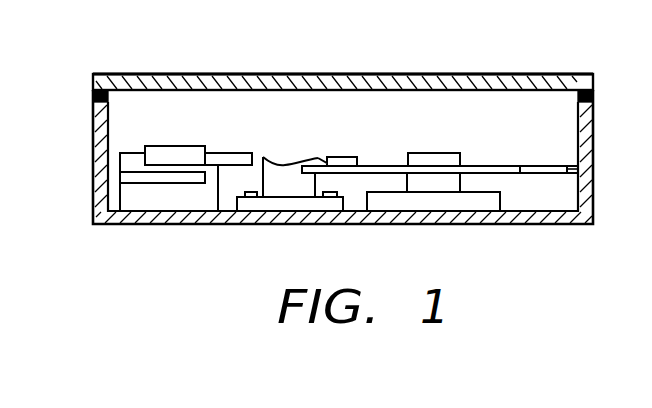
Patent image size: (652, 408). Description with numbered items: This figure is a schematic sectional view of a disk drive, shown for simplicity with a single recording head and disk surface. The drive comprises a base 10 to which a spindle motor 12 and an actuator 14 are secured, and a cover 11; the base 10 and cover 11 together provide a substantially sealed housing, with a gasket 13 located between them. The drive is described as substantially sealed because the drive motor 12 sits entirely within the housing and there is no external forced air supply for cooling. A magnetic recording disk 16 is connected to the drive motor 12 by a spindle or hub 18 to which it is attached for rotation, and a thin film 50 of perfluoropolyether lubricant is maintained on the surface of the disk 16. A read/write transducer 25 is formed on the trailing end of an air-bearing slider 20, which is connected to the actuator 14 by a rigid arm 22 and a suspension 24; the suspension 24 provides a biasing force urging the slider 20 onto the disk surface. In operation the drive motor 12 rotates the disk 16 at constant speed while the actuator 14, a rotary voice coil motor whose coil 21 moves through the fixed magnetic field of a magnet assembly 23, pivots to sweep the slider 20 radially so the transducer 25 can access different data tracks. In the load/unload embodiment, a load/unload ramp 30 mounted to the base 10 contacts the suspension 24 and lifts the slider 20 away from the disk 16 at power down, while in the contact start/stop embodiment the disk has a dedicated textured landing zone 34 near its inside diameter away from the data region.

The base 10 is at (533, 218).
The cover 11 is at (113, 79).
The spindle motor 12 is at (443, 200).
The gasket 13 is at (594, 91).
The actuator 14 is at (155, 203).
The magnetic recording disk 16 is at (578, 169).
The spindle or hub 18 is at (436, 153).
The air-bearing slider 20 is at (352, 166).
The coil 21 is at (147, 149).
The rigid arm 22 is at (227, 157).
The magnet assembly 23 is at (127, 180).
The suspension 24 is at (263, 156).
The read/write transducer 25 is at (320, 157).
The load/unload ramp 30 is at (293, 158).
The textured landing zone 34 is at (483, 166).
The thin film of lubricant 50 is at (535, 166).